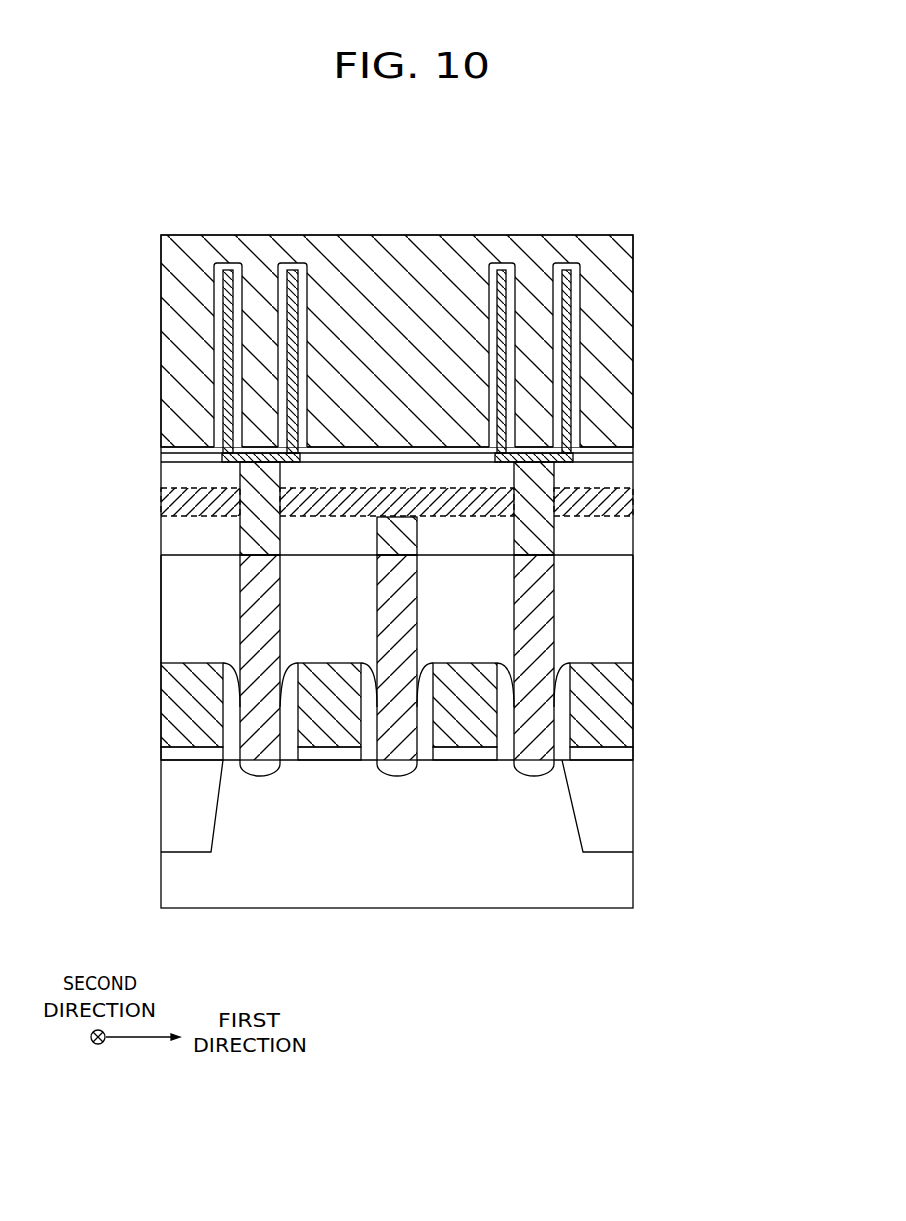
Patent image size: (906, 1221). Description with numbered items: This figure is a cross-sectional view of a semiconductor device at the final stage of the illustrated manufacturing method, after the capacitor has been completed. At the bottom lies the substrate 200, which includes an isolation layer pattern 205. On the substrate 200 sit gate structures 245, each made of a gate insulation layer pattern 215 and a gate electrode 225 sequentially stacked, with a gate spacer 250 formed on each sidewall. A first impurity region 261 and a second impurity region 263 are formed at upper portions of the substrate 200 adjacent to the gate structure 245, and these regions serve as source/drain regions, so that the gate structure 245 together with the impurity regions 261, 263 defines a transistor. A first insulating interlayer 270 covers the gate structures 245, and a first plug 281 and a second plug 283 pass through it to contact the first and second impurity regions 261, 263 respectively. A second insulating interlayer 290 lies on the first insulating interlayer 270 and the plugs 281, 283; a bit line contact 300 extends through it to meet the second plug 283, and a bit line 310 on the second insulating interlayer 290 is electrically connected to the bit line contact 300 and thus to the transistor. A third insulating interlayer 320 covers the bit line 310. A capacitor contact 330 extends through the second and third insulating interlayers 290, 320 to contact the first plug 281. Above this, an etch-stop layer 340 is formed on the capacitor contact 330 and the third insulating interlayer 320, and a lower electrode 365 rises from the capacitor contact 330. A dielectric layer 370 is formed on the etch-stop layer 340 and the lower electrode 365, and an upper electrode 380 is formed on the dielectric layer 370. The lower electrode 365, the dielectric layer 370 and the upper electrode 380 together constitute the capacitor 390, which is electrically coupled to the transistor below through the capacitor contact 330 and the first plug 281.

The substrate 200 is at (630, 878).
The isolation layer pattern 205 is at (630, 808).
The gate insulation layer pattern 215 is at (438, 758).
The gate electrode 225 is at (630, 692).
The gate structure 245 is at (465, 716).
The gate spacer 250 is at (562, 750).
The first impurity region 261 is at (258, 770).
The second impurity region 263 is at (392, 775).
The first insulating interlayer 270 is at (628, 632).
The first plug 281 is at (250, 638).
The second plug 283 is at (387, 607).
The second insulating interlayer 290 is at (628, 535).
The bit line contact 300 is at (380, 533).
The bit line 310 is at (630, 502).
The third insulating interlayer 320 is at (630, 472).
The capacitor contact 330 is at (240, 473).
The etch-stop layer 340 is at (167, 455).
The lower electrode 365 is at (469, 361).
The dielectric layer 370 is at (573, 304).
The upper electrode 380 is at (630, 256).
The capacitor 390 is at (465, 344).